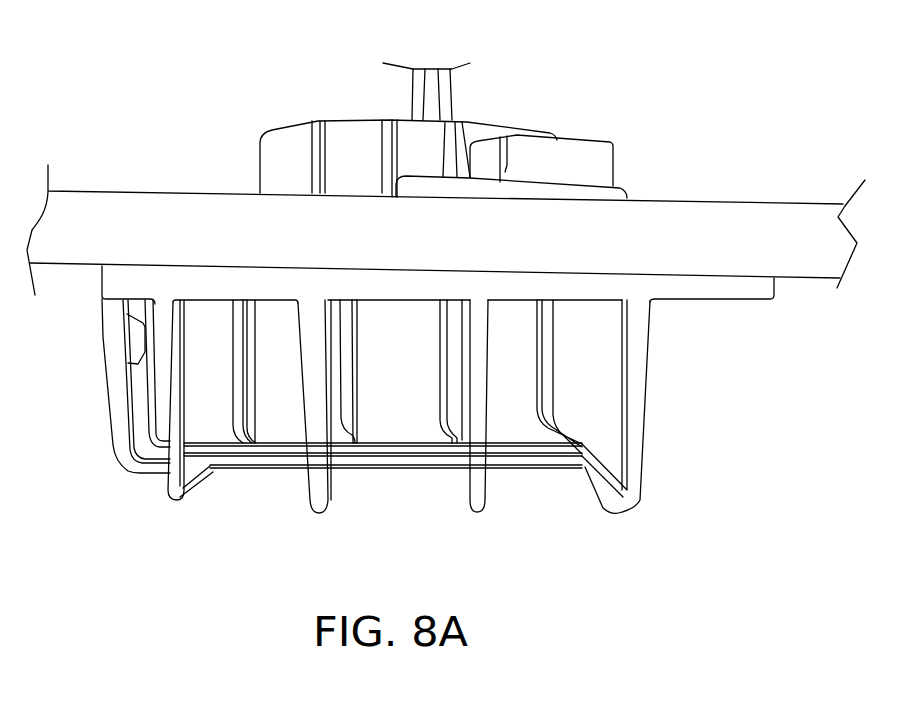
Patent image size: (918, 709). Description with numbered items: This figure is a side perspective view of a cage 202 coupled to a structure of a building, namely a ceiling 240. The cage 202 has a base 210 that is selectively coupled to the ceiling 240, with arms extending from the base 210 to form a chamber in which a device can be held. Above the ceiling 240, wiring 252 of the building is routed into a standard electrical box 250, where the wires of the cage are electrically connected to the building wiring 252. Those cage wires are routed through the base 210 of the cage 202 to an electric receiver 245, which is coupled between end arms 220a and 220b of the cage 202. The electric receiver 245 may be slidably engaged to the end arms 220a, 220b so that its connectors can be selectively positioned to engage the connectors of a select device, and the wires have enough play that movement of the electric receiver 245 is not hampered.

The cage 202 is at (628, 522).
The base 210 is at (567, 288).
The end arm 220a is at (117, 432).
The end arm 220b is at (150, 418).
The ceiling 240 is at (757, 247).
The electric receiver 245 is at (138, 347).
The electrical box 250 is at (338, 145).
The wiring 252 is at (443, 93).